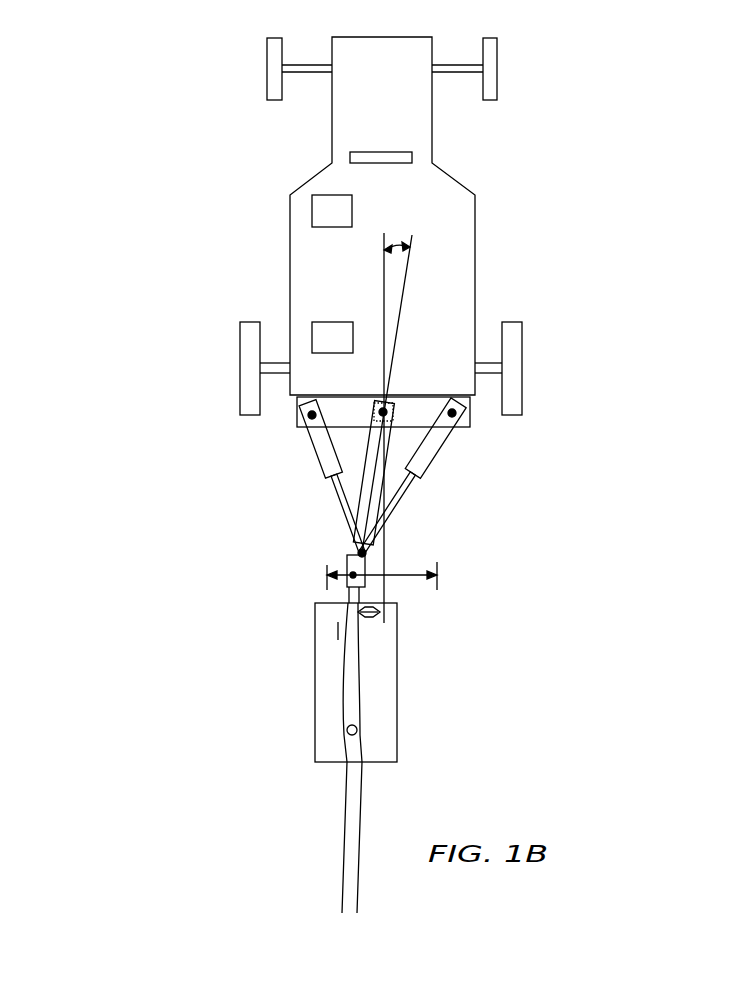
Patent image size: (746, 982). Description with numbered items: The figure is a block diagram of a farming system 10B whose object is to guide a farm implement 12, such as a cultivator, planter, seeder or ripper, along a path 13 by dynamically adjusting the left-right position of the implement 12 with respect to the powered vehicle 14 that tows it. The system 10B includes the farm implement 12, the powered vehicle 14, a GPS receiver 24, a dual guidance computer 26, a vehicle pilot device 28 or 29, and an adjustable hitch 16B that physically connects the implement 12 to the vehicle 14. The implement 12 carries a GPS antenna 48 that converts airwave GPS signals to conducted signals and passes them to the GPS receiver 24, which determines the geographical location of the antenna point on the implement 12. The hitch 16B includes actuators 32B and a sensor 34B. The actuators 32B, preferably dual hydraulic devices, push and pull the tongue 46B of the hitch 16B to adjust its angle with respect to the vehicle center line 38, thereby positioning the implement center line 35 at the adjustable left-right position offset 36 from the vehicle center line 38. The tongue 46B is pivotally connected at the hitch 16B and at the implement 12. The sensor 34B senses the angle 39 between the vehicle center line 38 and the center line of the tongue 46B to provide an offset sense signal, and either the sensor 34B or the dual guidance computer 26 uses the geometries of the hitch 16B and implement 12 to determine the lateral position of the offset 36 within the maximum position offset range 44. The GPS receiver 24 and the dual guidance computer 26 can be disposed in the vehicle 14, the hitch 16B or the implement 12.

The farming system 10B is at (652, 126).
The powered vehicle 14 is at (318, 173).
The vehicle pilot device 28 is at (380, 135).
The vehicle pilot device 29 is at (385, 150).
The dual guidance computer 26 is at (352, 205).
The GPS receiver 24 is at (337, 322).
The vehicle center line 38 is at (382, 352).
The angle 39 is at (403, 238).
The adjustable hitch 16B is at (302, 427).
The actuators 32B is at (320, 468).
The sensor 34B is at (389, 423).
The tongue 46B is at (352, 558).
The maximum position offset range 44 is at (403, 572).
The farm implement 12 is at (314, 700).
The path 13 is at (347, 823).
The implement center line 35 is at (352, 633).
The adjustable left-right position offset 36 is at (368, 618).
The GPS antenna 48 is at (357, 730).